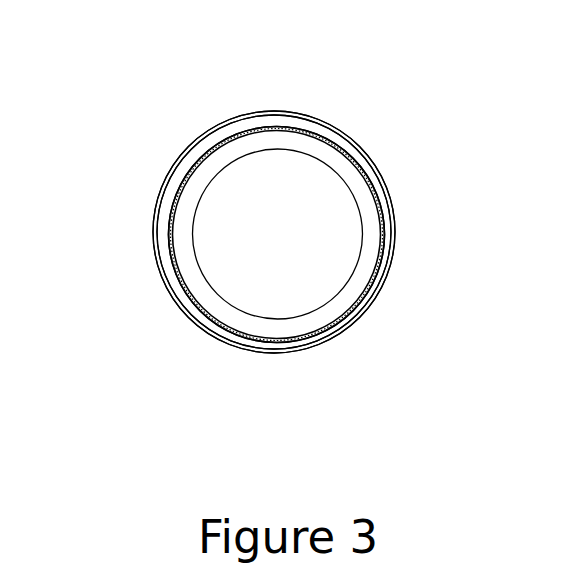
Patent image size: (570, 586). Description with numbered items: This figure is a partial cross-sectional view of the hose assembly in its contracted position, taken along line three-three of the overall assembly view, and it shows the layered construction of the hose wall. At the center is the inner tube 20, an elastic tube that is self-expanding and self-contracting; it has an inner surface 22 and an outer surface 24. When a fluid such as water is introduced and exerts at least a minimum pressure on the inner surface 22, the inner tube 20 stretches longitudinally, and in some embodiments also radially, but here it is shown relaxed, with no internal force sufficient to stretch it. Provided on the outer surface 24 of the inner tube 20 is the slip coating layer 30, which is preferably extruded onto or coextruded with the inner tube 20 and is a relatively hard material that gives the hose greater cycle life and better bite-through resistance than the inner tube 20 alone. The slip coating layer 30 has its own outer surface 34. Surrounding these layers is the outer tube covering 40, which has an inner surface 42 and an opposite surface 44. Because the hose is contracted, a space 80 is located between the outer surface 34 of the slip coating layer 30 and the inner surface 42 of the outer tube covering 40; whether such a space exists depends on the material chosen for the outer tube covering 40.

The inner tube 20 is at (330, 147).
The inner surface 22 is at (299, 151).
The outer surface 24 is at (308, 128).
The slip coating layer 30 is at (383, 205).
The outer surface 34 is at (375, 163).
The outer tube covering 40 is at (197, 138).
The inner surface 42 is at (391, 285).
The outer jacket outer surface 44 is at (351, 338).
The space 80 is at (364, 318).